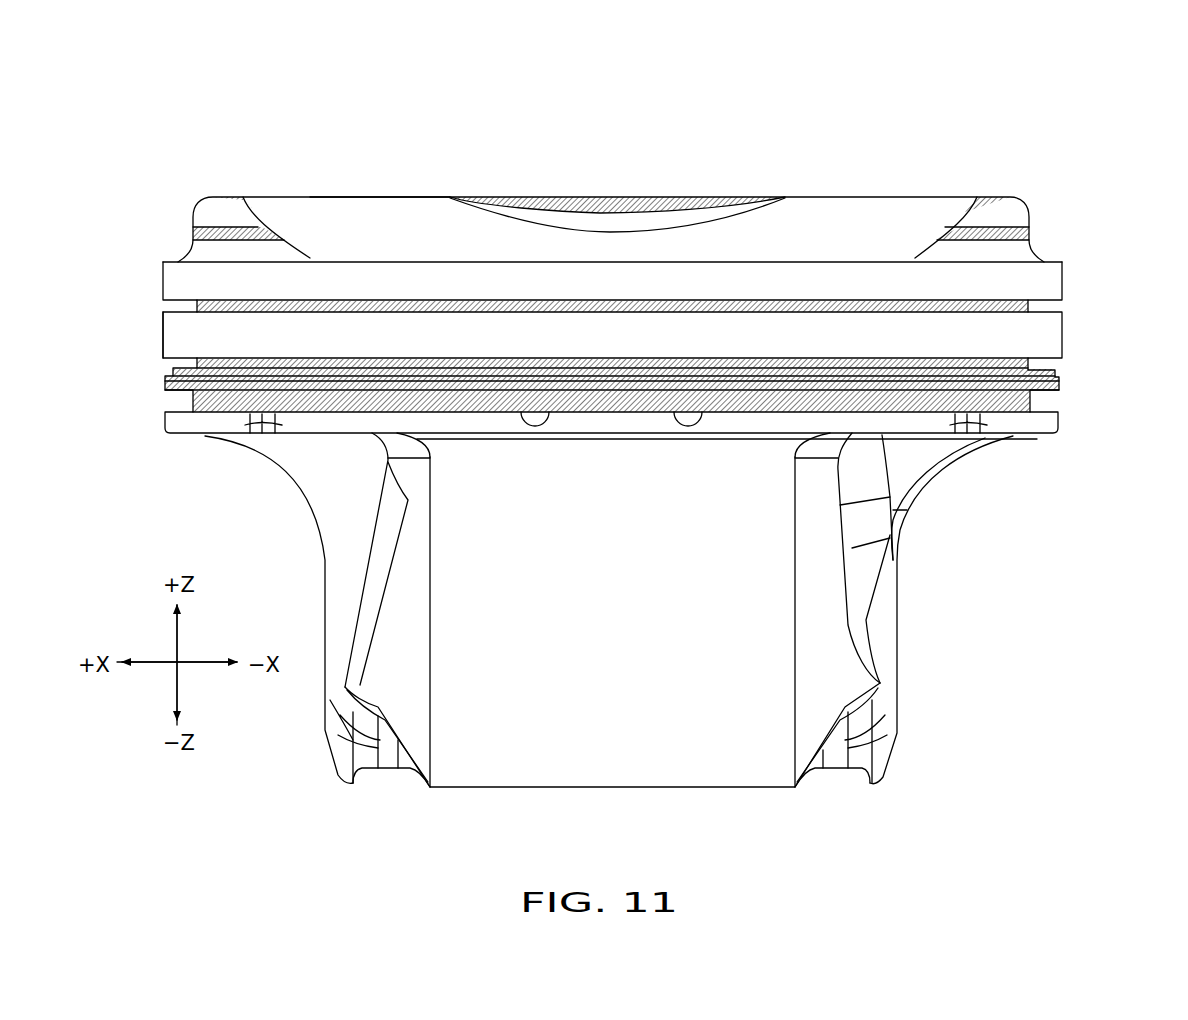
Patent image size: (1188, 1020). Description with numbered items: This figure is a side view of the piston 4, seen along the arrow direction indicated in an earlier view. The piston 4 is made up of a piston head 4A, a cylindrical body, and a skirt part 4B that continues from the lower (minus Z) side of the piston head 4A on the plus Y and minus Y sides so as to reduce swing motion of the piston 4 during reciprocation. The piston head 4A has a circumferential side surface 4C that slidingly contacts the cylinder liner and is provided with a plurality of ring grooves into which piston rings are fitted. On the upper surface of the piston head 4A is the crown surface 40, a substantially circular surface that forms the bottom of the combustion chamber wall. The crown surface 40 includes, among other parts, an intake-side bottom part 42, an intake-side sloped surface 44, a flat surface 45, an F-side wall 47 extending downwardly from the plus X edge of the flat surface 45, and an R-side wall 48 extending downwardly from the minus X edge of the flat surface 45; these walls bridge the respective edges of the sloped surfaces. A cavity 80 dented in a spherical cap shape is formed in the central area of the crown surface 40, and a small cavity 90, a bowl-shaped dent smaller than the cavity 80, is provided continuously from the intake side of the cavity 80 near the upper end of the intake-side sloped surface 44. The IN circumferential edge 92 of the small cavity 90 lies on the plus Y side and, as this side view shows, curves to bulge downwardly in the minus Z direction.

The piston 4 is at (1042, 123).
The crown surface 40 is at (806, 163).
The intake-side bottom part 42 is at (390, 262).
The intake-side sloped surface 44 is at (860, 215).
The flat surface 45 is at (305, 197).
The F-side wall 47 is at (193, 218).
The R-side wall 48 is at (1030, 225).
The cavity 80 is at (526, 191).
The small cavity 90 is at (618, 217).
The IN circumferential edge 92 is at (632, 234).
The piston head 4A is at (1082, 305).
The skirt part 4B is at (930, 603).
The circumferential side surface 4C is at (163, 340).